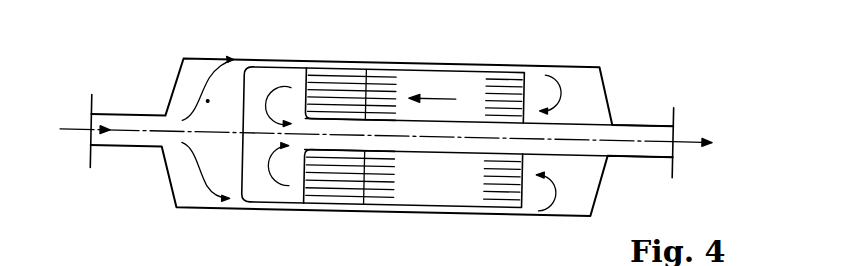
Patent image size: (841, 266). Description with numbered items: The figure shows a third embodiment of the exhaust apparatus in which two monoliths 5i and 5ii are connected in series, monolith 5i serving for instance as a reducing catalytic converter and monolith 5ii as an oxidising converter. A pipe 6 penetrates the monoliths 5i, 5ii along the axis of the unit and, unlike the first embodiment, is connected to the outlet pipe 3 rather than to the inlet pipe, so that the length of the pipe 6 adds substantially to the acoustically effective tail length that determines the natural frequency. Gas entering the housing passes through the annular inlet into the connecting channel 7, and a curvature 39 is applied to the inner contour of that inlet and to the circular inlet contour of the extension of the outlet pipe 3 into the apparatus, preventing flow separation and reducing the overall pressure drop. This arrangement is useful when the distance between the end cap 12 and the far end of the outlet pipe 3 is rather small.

The outlet pipe 3 is at (658, 119).
The end cap 12 is at (603, 86).
The curvature 39 is at (309, 150).
The connecting channel 7 is at (387, 63).
The pipe 6 is at (462, 129).
The monolith 5i is at (328, 91).
The monolith 5ii is at (425, 82).